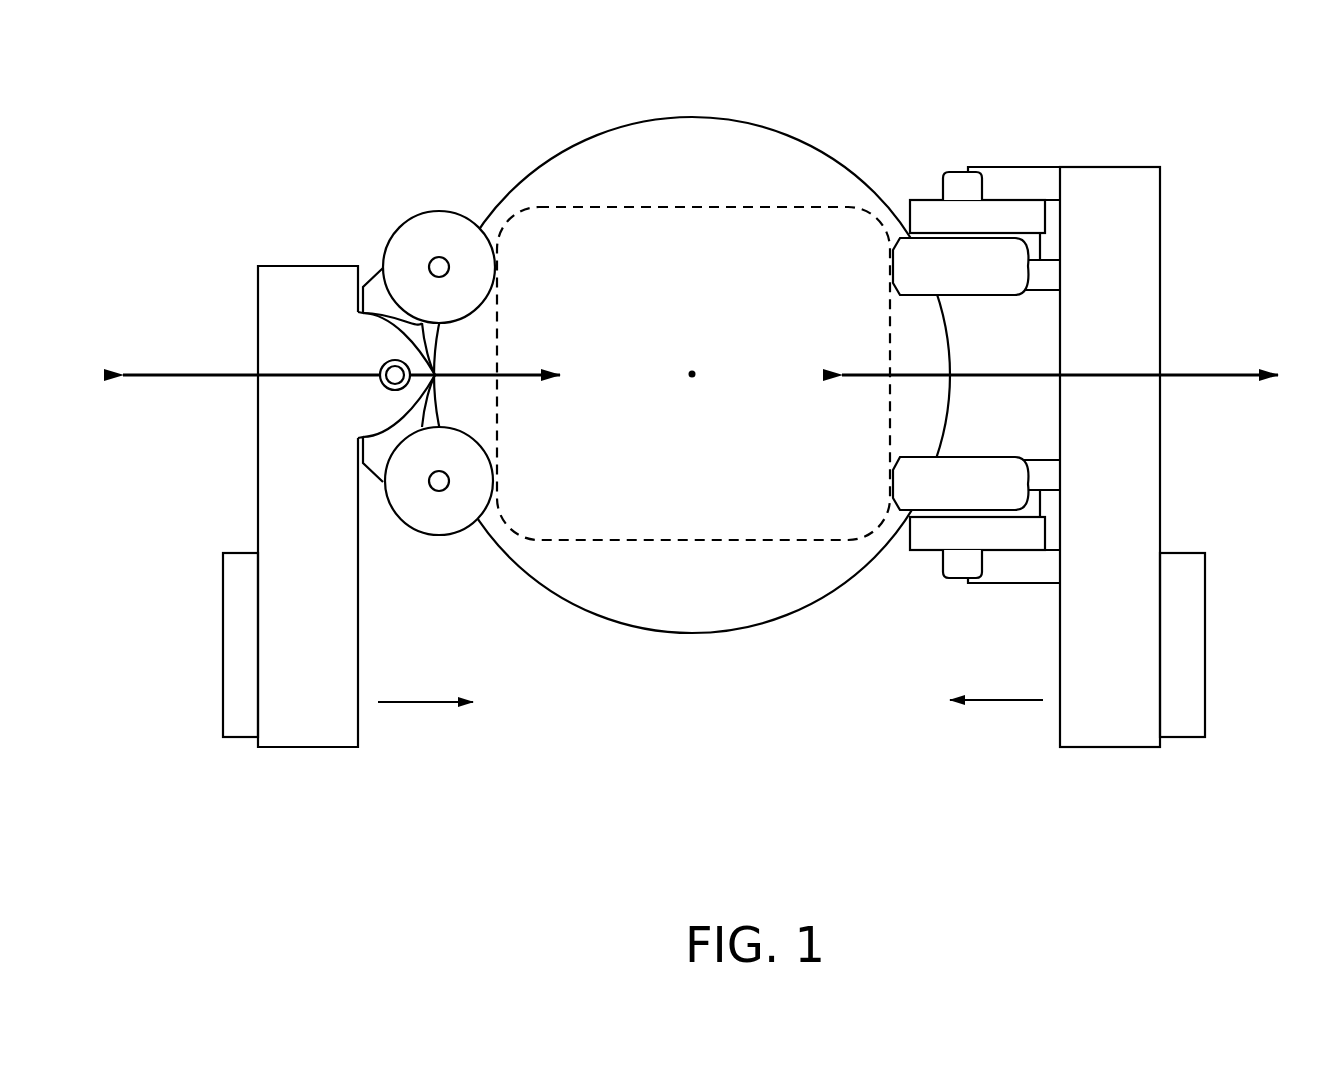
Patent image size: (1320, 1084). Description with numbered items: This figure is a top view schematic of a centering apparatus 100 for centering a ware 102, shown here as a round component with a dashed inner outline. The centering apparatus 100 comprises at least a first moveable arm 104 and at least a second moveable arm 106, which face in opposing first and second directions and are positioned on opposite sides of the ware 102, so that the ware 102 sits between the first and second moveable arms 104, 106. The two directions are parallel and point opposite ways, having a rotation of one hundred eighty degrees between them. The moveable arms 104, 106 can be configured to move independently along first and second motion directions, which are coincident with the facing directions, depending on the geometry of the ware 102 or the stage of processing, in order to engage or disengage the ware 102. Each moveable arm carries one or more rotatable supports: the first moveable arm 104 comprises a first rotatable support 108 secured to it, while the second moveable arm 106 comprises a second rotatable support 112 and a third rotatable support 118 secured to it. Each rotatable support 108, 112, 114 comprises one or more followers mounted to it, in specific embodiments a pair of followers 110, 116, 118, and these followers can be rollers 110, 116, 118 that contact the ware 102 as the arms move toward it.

The centering apparatus 100 is at (258, 98).
The ware 102 is at (562, 237).
The first moveable arm 104 is at (315, 723).
The second moveable arm 106 is at (1090, 723).
The first rotatable support 108 is at (402, 563).
The roller 110 is at (410, 258).
The second rotatable support 112 is at (928, 587).
The rotatable support 114 is at (1003, 133).
The roller 116 is at (990, 477).
The third rotatable support 118 is at (948, 262).